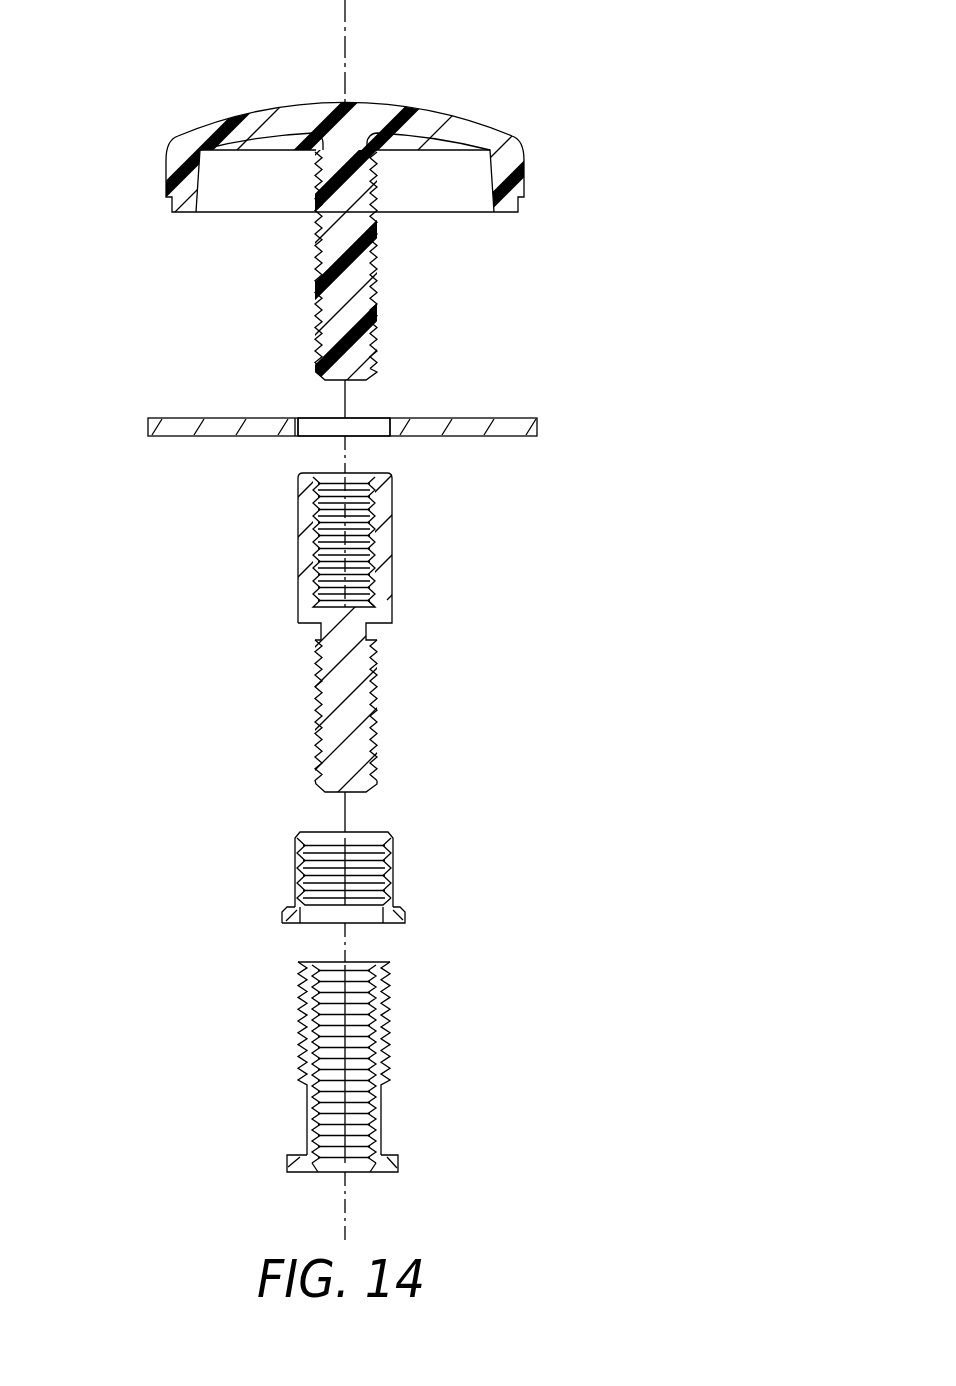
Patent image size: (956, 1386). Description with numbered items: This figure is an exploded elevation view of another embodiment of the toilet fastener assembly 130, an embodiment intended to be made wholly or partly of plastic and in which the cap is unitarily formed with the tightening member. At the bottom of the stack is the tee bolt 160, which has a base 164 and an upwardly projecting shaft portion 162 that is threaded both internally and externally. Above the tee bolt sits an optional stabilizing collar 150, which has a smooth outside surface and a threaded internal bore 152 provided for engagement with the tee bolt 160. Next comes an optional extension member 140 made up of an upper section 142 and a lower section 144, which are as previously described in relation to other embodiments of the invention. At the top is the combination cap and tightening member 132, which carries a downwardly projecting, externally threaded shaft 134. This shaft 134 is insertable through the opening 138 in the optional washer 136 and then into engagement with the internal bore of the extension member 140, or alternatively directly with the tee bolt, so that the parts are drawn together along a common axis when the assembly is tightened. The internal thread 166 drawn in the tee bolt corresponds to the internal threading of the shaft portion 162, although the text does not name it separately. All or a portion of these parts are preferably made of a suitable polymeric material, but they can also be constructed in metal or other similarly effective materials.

The toilet fastener assembly 130 is at (362, 202).
The combination cap and tightening member 132 is at (263, 122).
The externally threaded shaft 134 is at (330, 243).
The washer 136 is at (178, 418).
The opening 138 is at (305, 428).
The extension member 140 is at (374, 600).
The upper section 142 is at (382, 500).
The lower section 144 is at (318, 708).
The stabilizing collar 150 is at (331, 848).
The threaded internal bore 152 is at (355, 840).
The tee bolt 160 is at (353, 1088).
The shaft portion 162 is at (300, 1022).
The base 164 is at (293, 1168).
The internal thread 166 is at (352, 965).